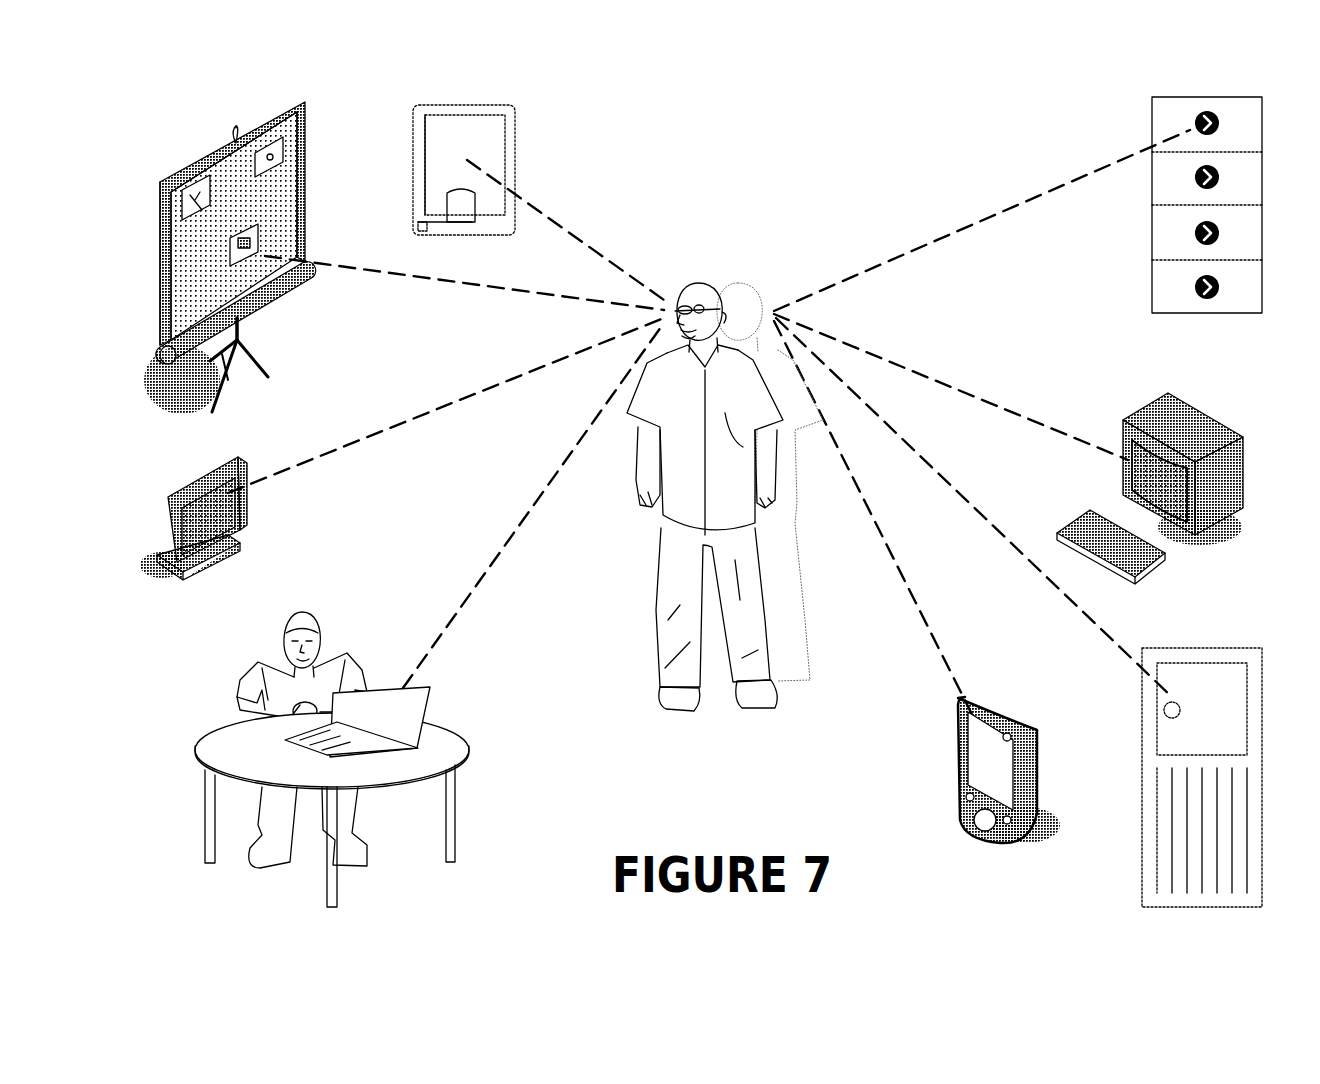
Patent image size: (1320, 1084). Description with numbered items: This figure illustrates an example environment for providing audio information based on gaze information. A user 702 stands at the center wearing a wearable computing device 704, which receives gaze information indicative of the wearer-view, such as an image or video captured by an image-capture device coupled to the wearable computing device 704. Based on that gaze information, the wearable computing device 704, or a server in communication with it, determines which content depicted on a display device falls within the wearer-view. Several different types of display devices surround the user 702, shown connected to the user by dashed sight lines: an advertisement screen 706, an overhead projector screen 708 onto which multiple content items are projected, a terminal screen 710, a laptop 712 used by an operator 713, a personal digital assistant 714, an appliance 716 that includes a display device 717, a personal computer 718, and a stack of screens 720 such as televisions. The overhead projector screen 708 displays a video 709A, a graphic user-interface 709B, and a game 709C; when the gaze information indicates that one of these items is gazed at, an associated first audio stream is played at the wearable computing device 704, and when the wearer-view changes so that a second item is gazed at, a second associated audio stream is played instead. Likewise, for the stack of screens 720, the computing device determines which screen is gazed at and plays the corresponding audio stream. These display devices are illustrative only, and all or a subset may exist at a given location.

The user 702 is at (662, 525).
The wearable computing device 704 is at (670, 296).
The advertisement screen 706 is at (515, 160).
The overhead projector screen 708 is at (307, 185).
The video 709A is at (272, 160).
The graphic user-interface 709B is at (198, 215).
The game 709C is at (233, 255).
The terminal screen 710 is at (247, 520).
The laptop 712 is at (358, 747).
The operator 713 is at (235, 695).
The personal digital assistant (PDA) 714 is at (958, 760).
The appliance 716 is at (1142, 782).
The display device 717 is at (1157, 710).
The personal computer 718 is at (1123, 462).
The stack of screens 720 is at (1152, 313).